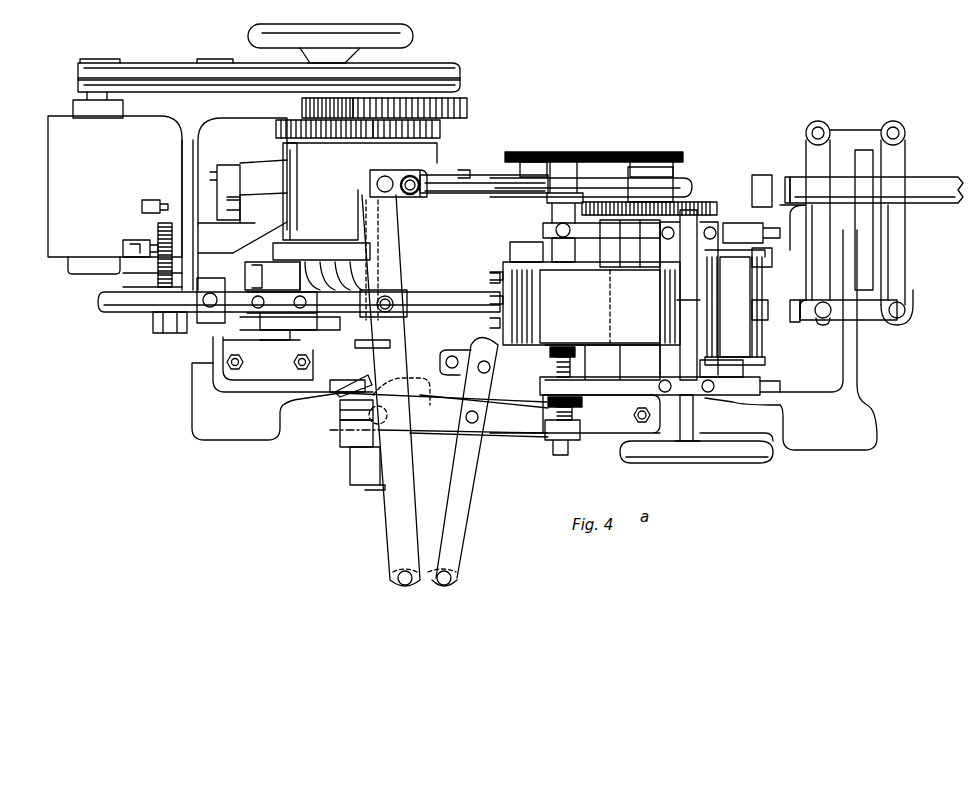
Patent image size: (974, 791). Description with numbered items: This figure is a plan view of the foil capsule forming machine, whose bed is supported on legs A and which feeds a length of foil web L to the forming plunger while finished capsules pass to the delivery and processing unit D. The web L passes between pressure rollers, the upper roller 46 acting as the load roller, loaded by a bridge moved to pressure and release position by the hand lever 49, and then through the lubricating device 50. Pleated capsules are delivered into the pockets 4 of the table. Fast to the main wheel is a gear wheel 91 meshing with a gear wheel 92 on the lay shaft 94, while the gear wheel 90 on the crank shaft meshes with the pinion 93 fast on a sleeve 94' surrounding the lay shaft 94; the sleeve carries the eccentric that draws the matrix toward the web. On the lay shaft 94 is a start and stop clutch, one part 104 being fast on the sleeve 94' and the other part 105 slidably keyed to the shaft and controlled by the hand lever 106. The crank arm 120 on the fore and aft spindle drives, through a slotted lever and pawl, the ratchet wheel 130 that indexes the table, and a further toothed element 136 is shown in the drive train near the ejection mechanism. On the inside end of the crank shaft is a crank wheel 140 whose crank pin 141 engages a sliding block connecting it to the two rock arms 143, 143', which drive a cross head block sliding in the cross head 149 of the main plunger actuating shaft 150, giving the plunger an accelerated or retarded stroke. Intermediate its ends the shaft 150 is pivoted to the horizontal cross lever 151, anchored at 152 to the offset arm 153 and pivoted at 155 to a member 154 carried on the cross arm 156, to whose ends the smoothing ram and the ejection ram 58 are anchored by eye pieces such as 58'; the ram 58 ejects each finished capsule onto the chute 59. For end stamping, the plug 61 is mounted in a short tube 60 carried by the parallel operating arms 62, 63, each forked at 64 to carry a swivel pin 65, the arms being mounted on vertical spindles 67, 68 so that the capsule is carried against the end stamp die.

The capsule receiving pocket 4 is at (760, 180).
The upper pressure roller 46 is at (740, 372).
The hand lever 49 is at (695, 235).
The lubricating device 50 is at (748, 308).
The second ram 58 is at (590, 172).
The eye piece 58' is at (484, 195).
The chute 59 is at (858, 175).
The short tube 60 is at (812, 322).
The plug 61 is at (788, 322).
The operating arm 62 is at (830, 250).
The operating arm 63 is at (898, 252).
The fork 64 is at (908, 312).
The swivel pin 65 is at (896, 320).
The vertical spindle 67 is at (822, 130).
The vertical spindle 68 is at (895, 130).
The gear wheel 90 is at (276, 127).
The gear wheel 91 is at (300, 104).
The gear wheel 92 is at (470, 104).
The pinion 93 is at (440, 129).
The lay shaft 94 is at (458, 407).
The sleeve 94' is at (347, 376).
The clutch part 104 is at (355, 385).
The clutch part 105 is at (350, 437).
The hand lever 106 is at (750, 455).
The crank arm 120 is at (230, 168).
The ratchet wheel 130 is at (158, 222).
The gear 136 is at (668, 200).
The crank wheel 140 is at (298, 245).
The crank pin 141 is at (276, 248).
The rock arm 143 is at (343, 269).
The rock arm 143' is at (307, 369).
The cross head 149 is at (235, 318).
The main plunger actuating shaft 150 is at (424, 296).
The horizontal cross lever 151 is at (380, 466).
The anchorage 152 is at (398, 575).
The offset arm 153 is at (460, 527).
The member 154 is at (400, 170).
The pivot 155 is at (398, 200).
The cross arm 156 is at (415, 192).
The legs A is at (240, 432).
The delivery and processing unit D is at (938, 178).
The web L is at (585, 321).